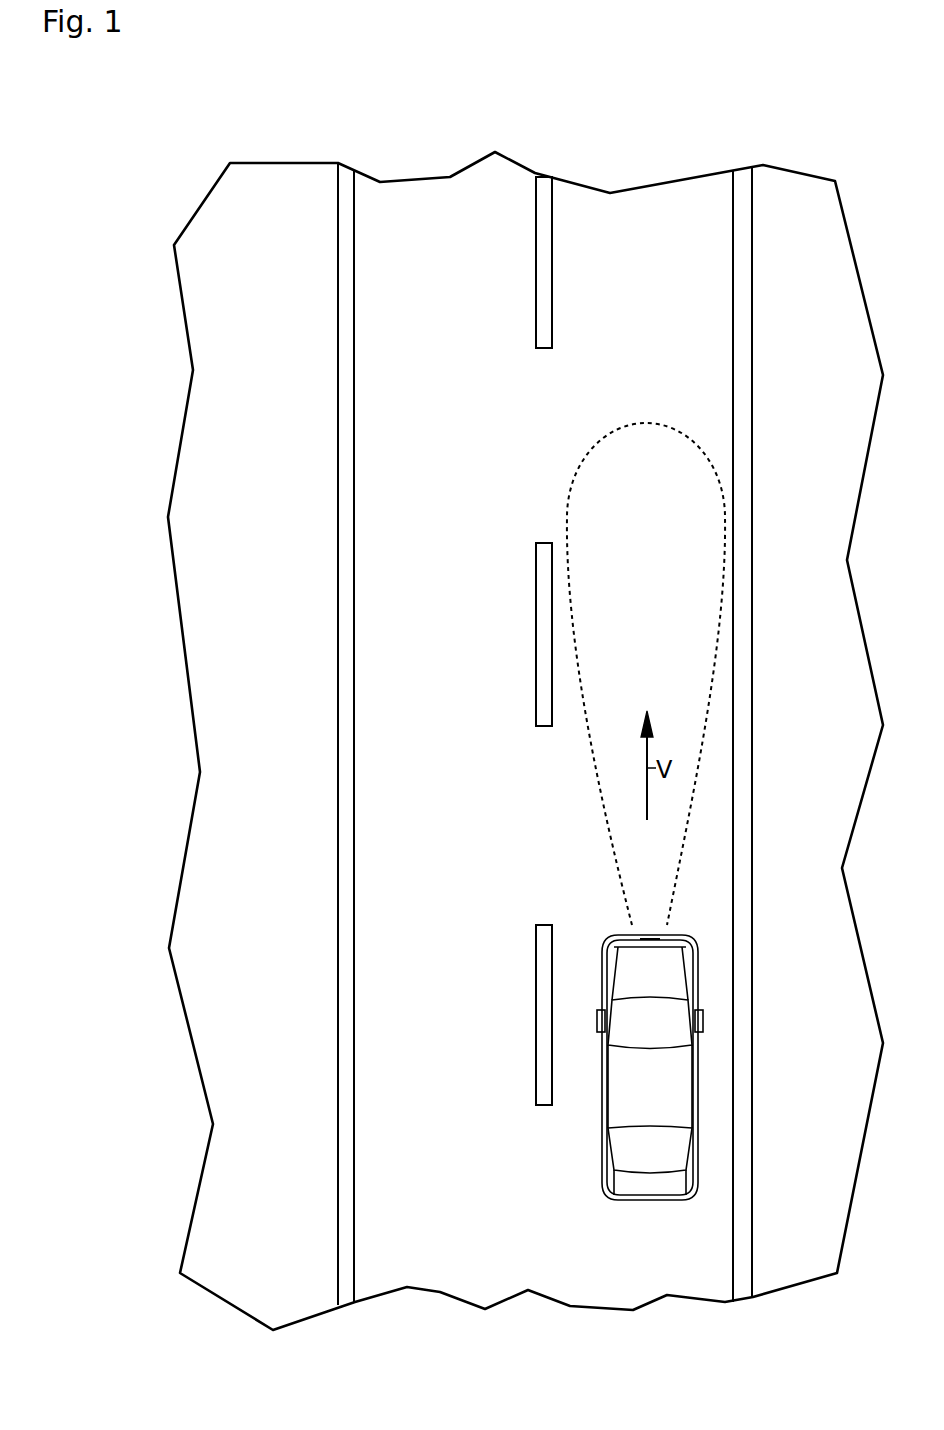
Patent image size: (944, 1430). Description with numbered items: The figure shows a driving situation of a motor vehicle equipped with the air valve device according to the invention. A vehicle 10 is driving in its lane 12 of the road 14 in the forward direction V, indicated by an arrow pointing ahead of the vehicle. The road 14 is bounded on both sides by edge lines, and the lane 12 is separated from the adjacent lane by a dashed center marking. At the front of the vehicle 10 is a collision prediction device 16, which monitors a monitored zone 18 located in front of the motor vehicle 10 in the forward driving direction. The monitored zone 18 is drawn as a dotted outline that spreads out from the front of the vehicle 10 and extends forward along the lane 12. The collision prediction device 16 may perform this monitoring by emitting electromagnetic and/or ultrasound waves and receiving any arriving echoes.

The vehicle 10 is at (665, 1114).
The lane 12 is at (665, 333).
The road 14 is at (521, 1262).
The collision prediction device 16 is at (654, 948).
The monitored zone 18 is at (662, 595).